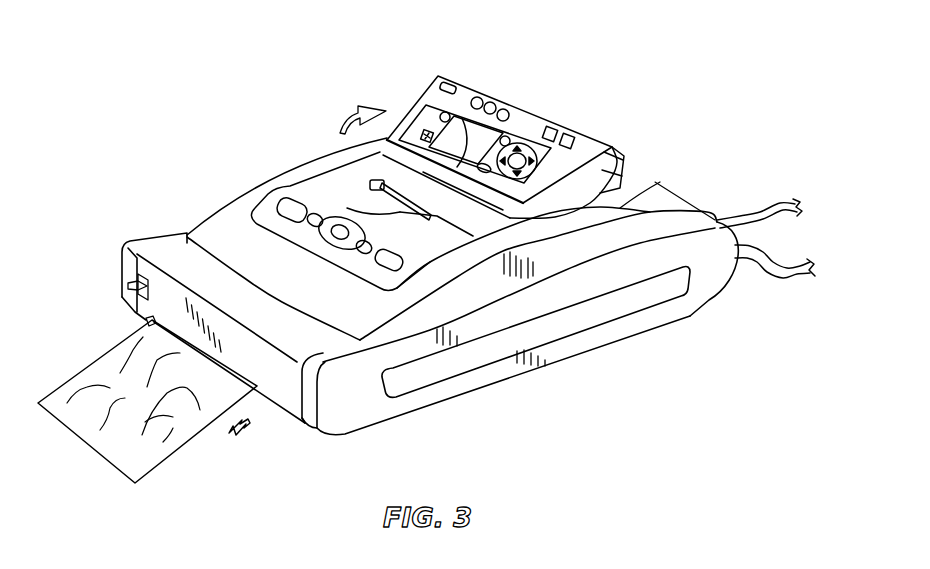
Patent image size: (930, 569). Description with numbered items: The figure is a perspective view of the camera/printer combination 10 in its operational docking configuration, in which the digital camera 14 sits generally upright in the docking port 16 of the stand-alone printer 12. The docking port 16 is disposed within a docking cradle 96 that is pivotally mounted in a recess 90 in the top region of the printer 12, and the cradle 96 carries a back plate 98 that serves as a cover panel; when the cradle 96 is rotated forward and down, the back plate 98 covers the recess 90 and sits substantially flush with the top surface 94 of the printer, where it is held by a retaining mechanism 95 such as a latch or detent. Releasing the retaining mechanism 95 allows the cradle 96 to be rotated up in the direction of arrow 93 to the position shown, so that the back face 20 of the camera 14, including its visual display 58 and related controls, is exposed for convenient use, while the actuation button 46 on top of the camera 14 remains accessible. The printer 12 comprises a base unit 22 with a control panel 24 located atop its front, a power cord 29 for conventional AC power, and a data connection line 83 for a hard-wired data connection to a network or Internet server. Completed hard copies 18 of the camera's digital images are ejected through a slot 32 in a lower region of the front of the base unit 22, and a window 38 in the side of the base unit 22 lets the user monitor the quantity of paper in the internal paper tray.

The camera/printer combination 10 is at (287, 68).
The printer 12 is at (228, 196).
The digital camera 14 is at (544, 108).
The docking port 16 is at (503, 152).
The hard copies 18 is at (150, 460).
The back face 20 is at (435, 95).
The base unit 22 is at (701, 287).
The control panel 24 is at (290, 188).
The power cord 29 is at (788, 280).
The slot 32 is at (145, 322).
The window 38 is at (435, 368).
The actuation button 46 is at (612, 138).
The visual display 58 is at (463, 120).
The data connection line 83 is at (775, 220).
The recess 90 is at (360, 163).
The arrow 93 is at (363, 96).
The top surface 94 is at (668, 182).
The retaining mechanism 95 is at (373, 210).
The docking cradle 96 is at (615, 150).
The back plate 98 is at (624, 160).